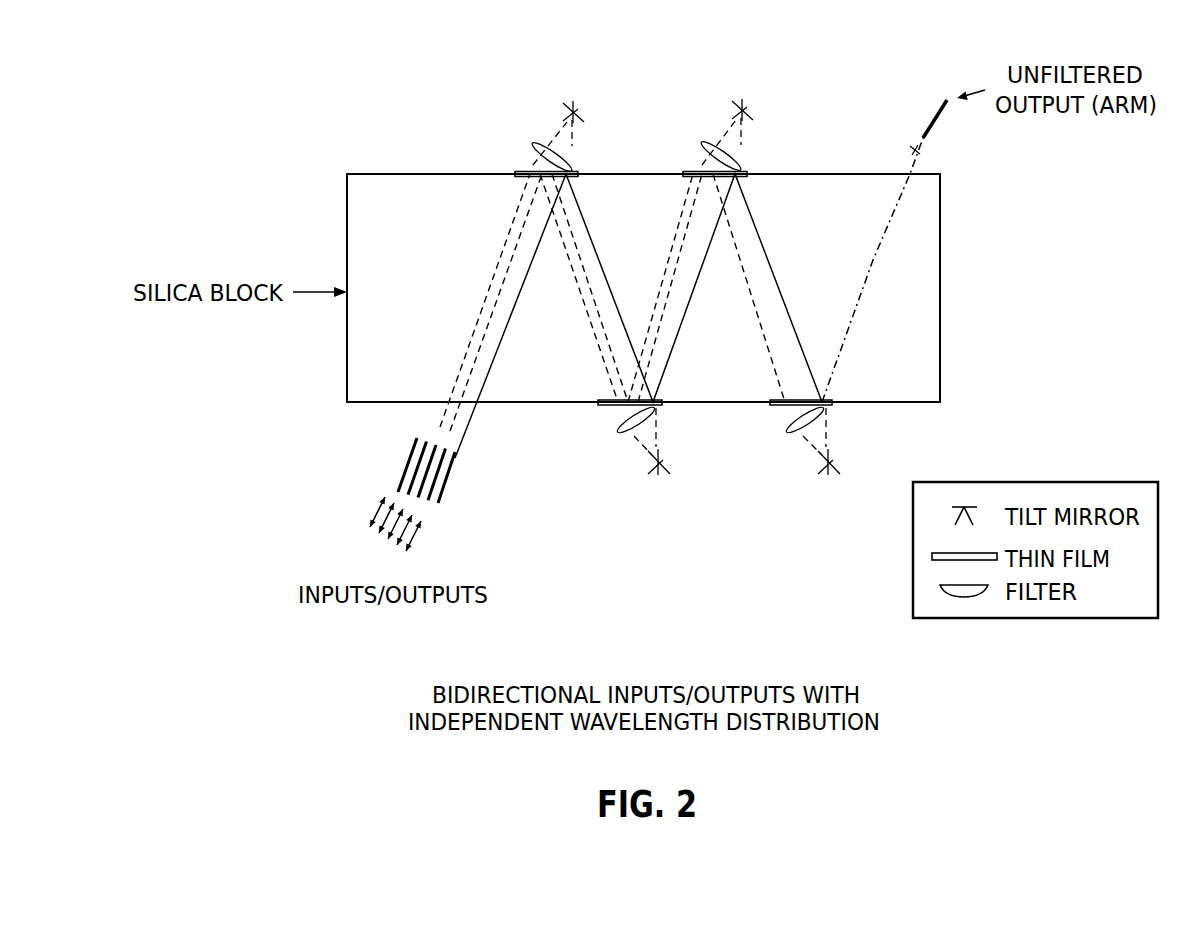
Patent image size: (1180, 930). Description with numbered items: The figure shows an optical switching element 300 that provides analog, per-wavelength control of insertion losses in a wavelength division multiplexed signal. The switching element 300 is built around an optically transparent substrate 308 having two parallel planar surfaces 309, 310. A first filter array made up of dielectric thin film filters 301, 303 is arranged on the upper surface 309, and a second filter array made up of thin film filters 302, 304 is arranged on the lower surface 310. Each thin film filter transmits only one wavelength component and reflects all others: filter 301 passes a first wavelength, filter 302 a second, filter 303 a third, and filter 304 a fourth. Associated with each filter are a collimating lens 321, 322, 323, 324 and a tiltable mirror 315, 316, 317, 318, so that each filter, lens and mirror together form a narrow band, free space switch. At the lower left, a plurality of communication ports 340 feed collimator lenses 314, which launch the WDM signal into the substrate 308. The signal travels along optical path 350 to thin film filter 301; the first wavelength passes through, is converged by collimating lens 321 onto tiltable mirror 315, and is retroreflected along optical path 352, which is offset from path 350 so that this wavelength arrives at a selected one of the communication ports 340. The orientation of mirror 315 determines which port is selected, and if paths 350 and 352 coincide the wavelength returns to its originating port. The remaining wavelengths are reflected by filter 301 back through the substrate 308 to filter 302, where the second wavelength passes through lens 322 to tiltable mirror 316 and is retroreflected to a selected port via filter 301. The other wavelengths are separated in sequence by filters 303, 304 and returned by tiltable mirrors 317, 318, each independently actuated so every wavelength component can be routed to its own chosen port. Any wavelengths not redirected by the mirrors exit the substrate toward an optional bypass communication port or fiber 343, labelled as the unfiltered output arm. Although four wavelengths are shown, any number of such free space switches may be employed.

The optical switching element 300 is at (314, 71).
The thin film filter 301 is at (520, 172).
The thin film filter 302 is at (600, 405).
The thin film filter 303 is at (690, 172).
The thin film filter 304 is at (769, 405).
The optically transparent substrate 308 is at (352, 345).
The planar surface 309 is at (395, 174).
The planar surface 310 is at (510, 403).
The collimator lens 314 is at (467, 491).
The tiltable mirror 315 is at (580, 112).
The tiltable mirror 316 is at (665, 459).
The tiltable mirror 317 is at (748, 110).
The tiltable mirror 318 is at (835, 459).
The collimating lens 321 is at (541, 143).
The collimating lens 322 is at (623, 434).
The collimating lens 323 is at (712, 143).
The collimating lens 324 is at (793, 434).
The communication ports 340 is at (463, 522).
The bypass communication port or fiber 343 is at (928, 130).
The optical path 350 is at (505, 333).
The optical path 352 is at (488, 297).